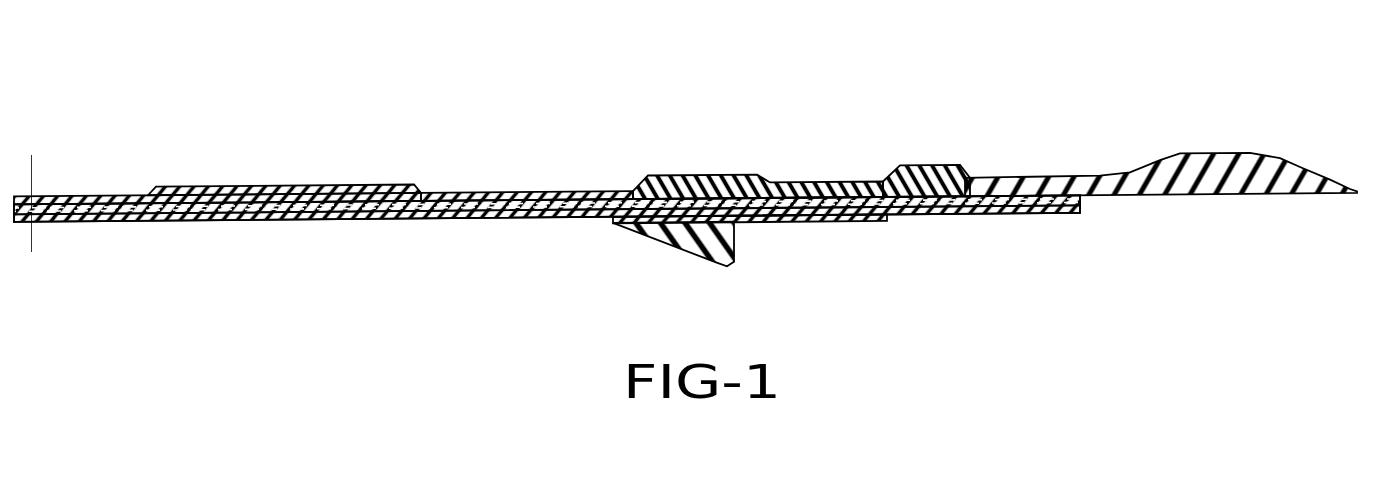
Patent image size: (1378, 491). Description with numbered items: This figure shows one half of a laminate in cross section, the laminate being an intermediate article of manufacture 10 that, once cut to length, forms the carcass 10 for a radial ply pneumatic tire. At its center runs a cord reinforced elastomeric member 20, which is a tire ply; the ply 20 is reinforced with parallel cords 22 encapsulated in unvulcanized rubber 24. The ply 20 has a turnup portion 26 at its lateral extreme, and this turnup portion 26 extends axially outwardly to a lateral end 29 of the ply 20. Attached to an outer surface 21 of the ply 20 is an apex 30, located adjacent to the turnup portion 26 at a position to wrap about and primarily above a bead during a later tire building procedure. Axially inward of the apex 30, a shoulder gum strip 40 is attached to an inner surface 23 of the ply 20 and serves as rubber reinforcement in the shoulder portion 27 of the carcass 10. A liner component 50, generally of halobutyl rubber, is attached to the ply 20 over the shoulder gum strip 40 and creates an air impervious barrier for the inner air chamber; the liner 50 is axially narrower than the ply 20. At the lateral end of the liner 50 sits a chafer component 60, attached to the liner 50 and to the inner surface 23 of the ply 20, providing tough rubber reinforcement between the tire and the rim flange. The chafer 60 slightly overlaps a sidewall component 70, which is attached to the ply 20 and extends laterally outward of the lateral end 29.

The intermediate article of manufacture 10 is at (1000, 112).
The cord reinforced elastomeric member 20 is at (511, 219).
The outer surface 21 is at (165, 223).
The parallel cords 22 is at (1010, 214).
The inner surface 23 is at (113, 197).
The unvulcanized rubber 24 is at (240, 223).
The turnup portion 26 is at (920, 228).
The shoulder portion 27 is at (335, 226).
The lateral end 29 is at (1082, 210).
The apex 30 is at (734, 252).
The shoulder gum strip 40 is at (323, 196).
The liner component 50 is at (520, 195).
The chafer component 60 is at (669, 181).
The sidewall component 70 is at (1262, 166).